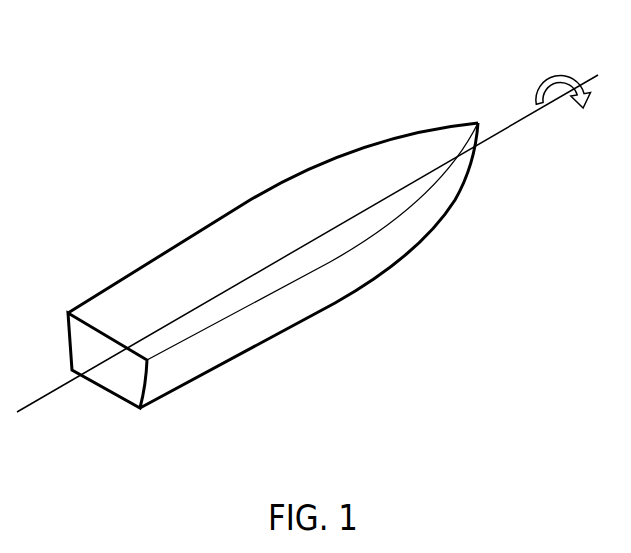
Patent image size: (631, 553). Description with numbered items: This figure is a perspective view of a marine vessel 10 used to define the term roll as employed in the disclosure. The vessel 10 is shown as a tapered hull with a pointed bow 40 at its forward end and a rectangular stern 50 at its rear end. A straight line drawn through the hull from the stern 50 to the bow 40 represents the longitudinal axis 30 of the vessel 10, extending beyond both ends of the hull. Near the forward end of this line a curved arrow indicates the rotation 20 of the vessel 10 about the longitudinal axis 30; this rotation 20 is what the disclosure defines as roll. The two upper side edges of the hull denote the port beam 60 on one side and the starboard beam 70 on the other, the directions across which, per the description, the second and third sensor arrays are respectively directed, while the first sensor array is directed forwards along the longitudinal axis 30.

The marine vessel 10 is at (262, 232).
The rotation 20 is at (577, 77).
The longitudinal axis 30 is at (517, 123).
The bow 40 is at (478, 123).
The stern 50 is at (82, 350).
The port beam 60 is at (346, 157).
The starboard beam 70 is at (375, 238).